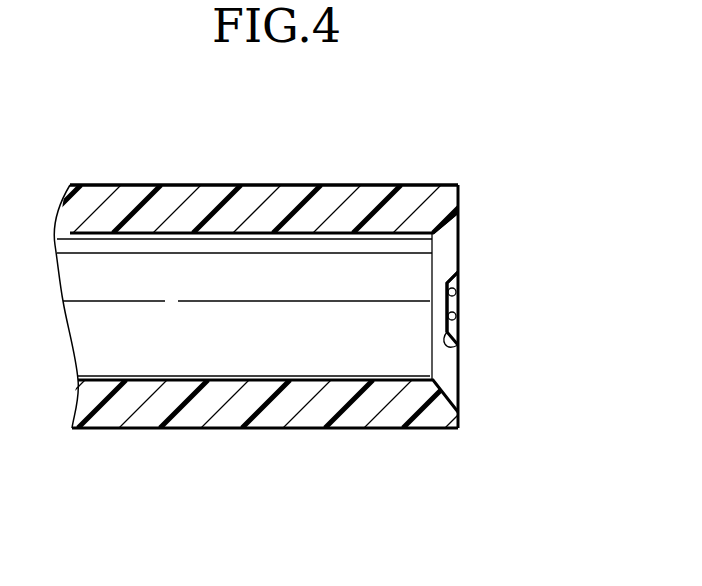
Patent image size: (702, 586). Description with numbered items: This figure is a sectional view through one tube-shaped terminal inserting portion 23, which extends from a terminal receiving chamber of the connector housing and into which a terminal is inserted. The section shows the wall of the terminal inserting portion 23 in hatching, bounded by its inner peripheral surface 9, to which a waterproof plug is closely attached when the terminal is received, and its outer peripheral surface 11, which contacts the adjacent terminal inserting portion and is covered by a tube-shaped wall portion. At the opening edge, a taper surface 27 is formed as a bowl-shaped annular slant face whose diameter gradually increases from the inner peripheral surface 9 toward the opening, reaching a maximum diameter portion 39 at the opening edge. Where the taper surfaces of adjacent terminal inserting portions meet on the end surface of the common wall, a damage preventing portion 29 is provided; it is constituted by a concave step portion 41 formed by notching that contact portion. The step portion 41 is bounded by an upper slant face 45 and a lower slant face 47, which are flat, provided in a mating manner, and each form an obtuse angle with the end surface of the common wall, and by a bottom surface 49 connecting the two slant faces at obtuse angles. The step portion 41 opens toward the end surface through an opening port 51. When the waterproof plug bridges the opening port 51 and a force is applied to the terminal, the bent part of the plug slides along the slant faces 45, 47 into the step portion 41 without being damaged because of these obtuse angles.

The inner peripheral surface 9 is at (290, 235).
The outer peripheral surface 11 is at (117, 200).
The terminal inserting portion 23 is at (188, 182).
The taper surface 27 is at (458, 380).
The damage preventing portion 29 is at (478, 268).
The maximum diameter portion 39 is at (458, 225).
The step portion 41 is at (448, 350).
The upper slant face 45 is at (446, 302).
The lower slant face 47 is at (455, 322).
The bottom surface 49 is at (447, 320).
The opening port 51 is at (458, 299).